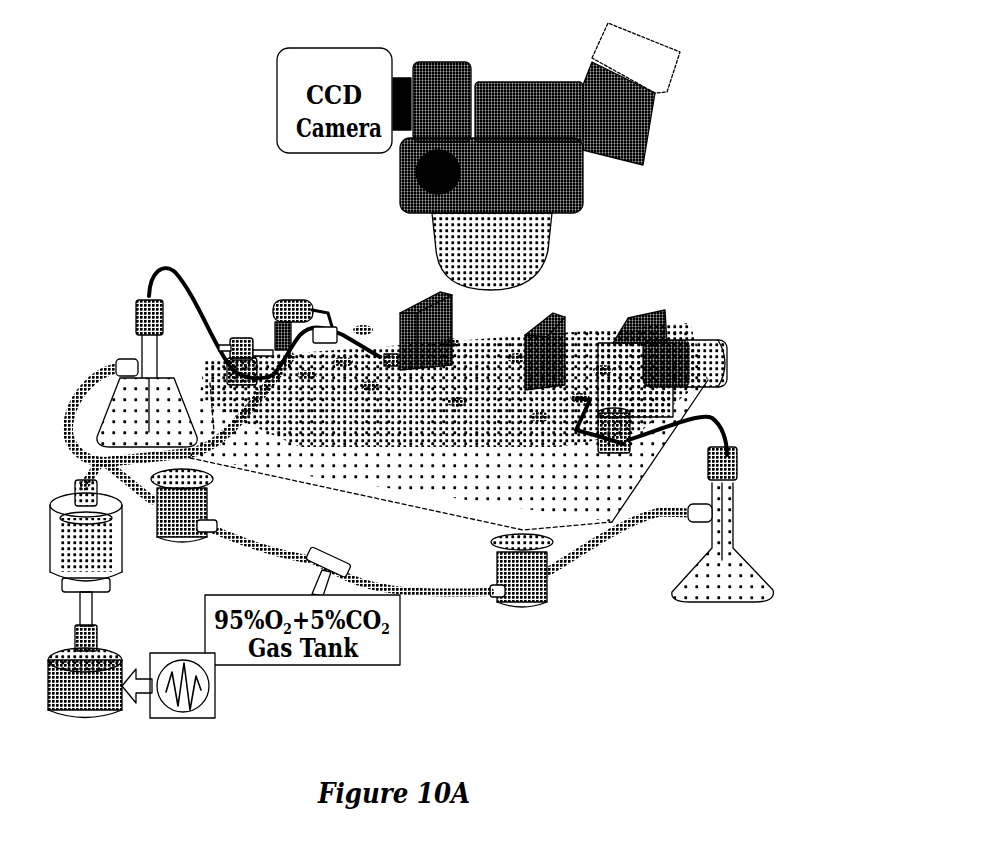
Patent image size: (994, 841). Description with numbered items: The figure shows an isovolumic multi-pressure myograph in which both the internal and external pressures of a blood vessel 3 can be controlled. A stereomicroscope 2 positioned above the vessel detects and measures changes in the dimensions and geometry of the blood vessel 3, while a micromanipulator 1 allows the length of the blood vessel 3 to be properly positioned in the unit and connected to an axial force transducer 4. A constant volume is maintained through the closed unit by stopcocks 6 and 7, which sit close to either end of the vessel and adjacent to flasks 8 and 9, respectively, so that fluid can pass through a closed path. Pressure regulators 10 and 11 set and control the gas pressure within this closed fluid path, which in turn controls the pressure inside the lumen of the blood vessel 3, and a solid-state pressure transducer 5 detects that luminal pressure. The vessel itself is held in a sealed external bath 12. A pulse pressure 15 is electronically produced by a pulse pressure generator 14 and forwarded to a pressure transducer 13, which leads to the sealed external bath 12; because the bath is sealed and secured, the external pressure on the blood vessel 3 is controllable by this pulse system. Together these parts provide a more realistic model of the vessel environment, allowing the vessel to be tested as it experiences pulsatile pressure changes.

The micromanipulator 1 is at (671, 340).
The stereomicroscope 2 is at (554, 240).
The blood vessel 3 is at (482, 341).
The axial force transducer 4 is at (371, 303).
The solid-state pressure transducer 5 is at (293, 289).
The stopcock 6 is at (235, 327).
The stopcock 7 is at (698, 406).
The flask 8 is at (137, 350).
The flask 9 is at (748, 524).
The pressure regulator 10 is at (188, 503).
The pressure regulator 11 is at (601, 558).
The sealed external bath 12 is at (449, 441).
The pressure transducer 13 is at (117, 536).
The pulse pressure generator 14 is at (105, 655).
The pulse pressure 15 is at (199, 685).